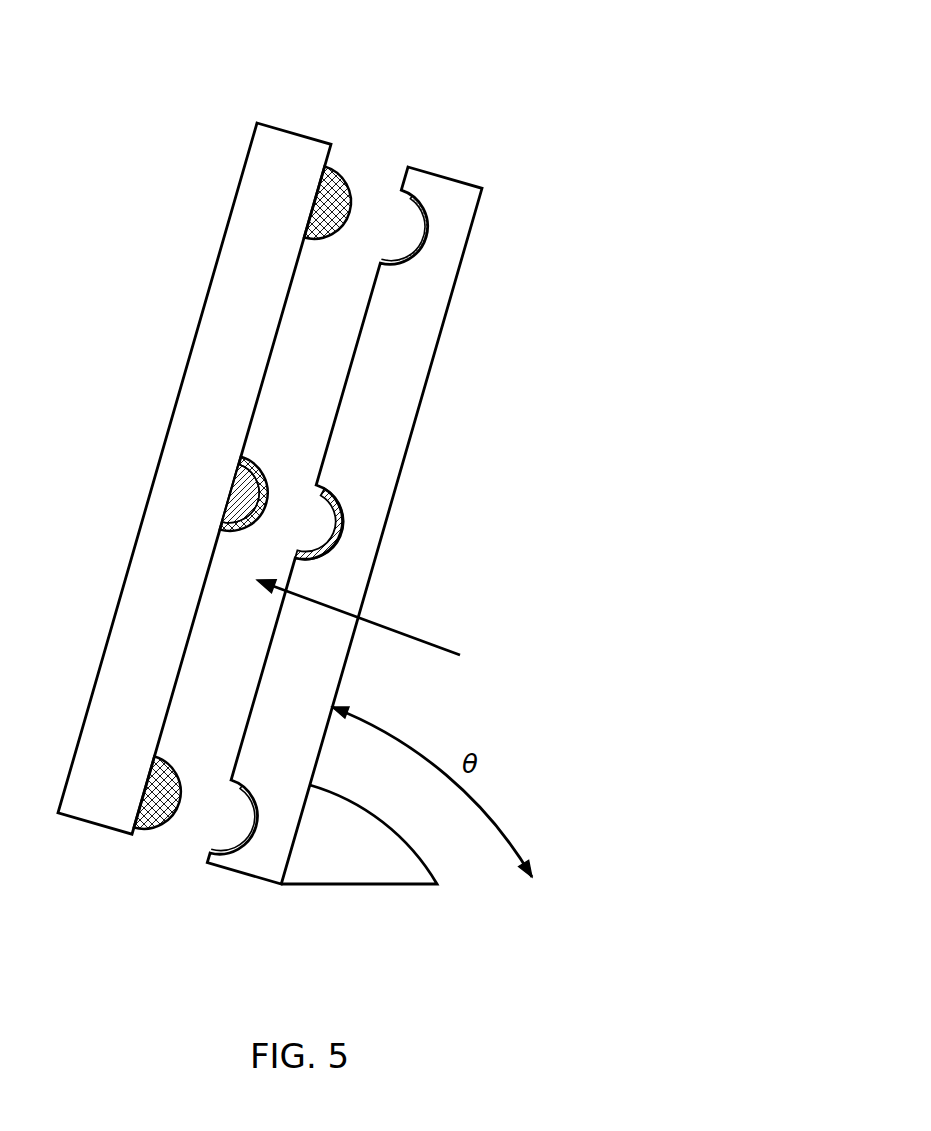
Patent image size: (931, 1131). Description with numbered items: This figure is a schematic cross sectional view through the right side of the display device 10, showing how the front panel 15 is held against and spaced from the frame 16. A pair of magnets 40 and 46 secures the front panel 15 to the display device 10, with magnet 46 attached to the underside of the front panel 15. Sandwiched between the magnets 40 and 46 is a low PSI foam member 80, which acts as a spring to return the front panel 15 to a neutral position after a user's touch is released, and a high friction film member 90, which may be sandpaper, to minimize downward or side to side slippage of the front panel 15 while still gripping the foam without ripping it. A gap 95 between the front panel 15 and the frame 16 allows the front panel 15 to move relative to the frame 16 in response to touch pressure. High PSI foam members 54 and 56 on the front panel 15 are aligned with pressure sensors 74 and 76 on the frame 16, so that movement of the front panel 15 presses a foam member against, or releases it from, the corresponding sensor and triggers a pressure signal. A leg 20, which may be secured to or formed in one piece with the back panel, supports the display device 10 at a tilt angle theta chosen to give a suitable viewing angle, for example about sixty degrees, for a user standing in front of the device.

The display device 10 is at (549, 70).
The front panel 15 is at (270, 124).
The frame 16 is at (470, 185).
The leg 20 is at (360, 814).
The magnet 40 is at (240, 503).
The magnet 46 is at (345, 523).
The high PSI foam member 54 is at (342, 176).
The high PSI foam member 56 is at (158, 788).
The pressure sensor 74 is at (425, 247).
The pressure sensor 76 is at (262, 816).
The low PSI foam member 80 is at (247, 452).
The high friction film member 90 is at (325, 552).
The gap 95 is at (377, 623).